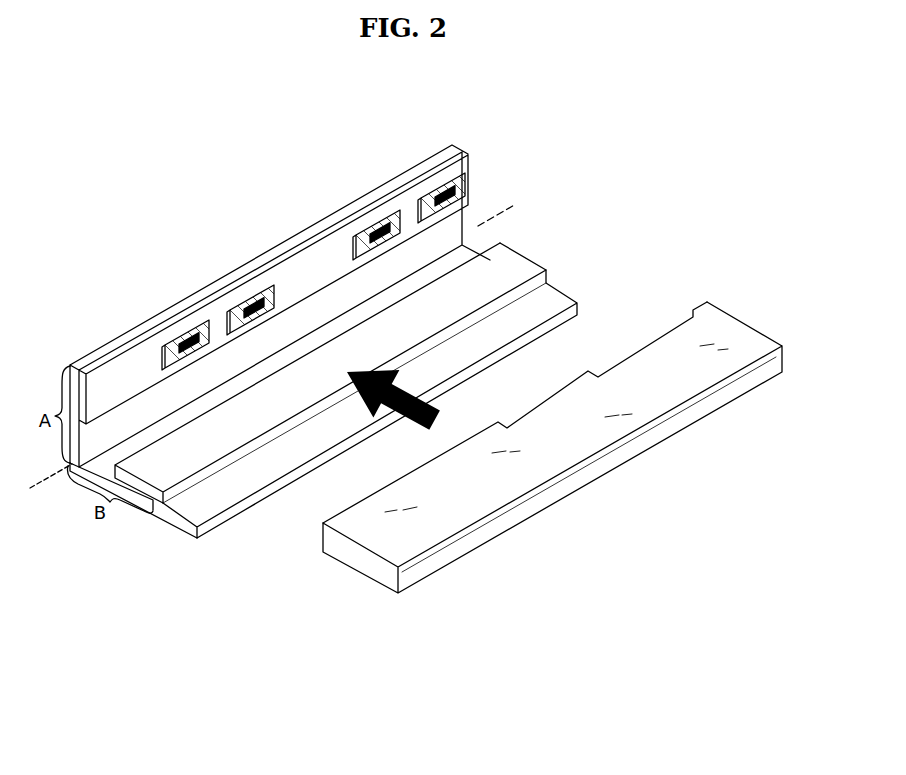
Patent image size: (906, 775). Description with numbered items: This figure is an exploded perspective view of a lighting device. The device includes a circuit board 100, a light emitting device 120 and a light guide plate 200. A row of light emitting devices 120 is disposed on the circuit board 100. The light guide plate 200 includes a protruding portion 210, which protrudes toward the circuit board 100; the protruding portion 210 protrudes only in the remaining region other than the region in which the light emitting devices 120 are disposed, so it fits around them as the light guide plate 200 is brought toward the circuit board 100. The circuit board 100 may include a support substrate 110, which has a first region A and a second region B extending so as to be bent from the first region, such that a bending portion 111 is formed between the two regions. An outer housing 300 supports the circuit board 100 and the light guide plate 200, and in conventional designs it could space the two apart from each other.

The circuit board 100 is at (470, 137).
The support substrate 110 is at (472, 247).
The bending portion 111 is at (36, 490).
The light emitting device 120 is at (252, 303).
The light guide plate 200 is at (527, 474).
The protruding portion 210 is at (357, 501).
The outer housing 300 is at (212, 508).